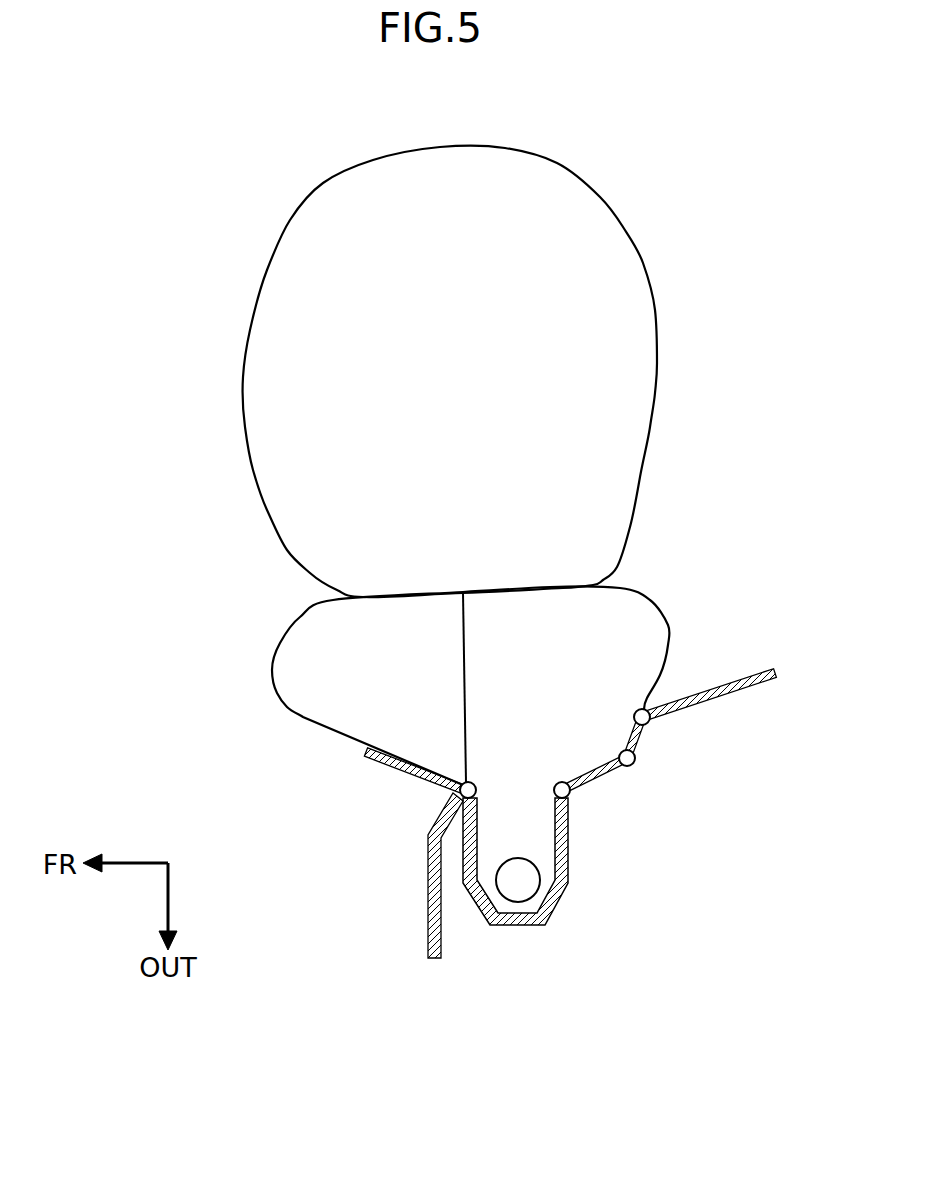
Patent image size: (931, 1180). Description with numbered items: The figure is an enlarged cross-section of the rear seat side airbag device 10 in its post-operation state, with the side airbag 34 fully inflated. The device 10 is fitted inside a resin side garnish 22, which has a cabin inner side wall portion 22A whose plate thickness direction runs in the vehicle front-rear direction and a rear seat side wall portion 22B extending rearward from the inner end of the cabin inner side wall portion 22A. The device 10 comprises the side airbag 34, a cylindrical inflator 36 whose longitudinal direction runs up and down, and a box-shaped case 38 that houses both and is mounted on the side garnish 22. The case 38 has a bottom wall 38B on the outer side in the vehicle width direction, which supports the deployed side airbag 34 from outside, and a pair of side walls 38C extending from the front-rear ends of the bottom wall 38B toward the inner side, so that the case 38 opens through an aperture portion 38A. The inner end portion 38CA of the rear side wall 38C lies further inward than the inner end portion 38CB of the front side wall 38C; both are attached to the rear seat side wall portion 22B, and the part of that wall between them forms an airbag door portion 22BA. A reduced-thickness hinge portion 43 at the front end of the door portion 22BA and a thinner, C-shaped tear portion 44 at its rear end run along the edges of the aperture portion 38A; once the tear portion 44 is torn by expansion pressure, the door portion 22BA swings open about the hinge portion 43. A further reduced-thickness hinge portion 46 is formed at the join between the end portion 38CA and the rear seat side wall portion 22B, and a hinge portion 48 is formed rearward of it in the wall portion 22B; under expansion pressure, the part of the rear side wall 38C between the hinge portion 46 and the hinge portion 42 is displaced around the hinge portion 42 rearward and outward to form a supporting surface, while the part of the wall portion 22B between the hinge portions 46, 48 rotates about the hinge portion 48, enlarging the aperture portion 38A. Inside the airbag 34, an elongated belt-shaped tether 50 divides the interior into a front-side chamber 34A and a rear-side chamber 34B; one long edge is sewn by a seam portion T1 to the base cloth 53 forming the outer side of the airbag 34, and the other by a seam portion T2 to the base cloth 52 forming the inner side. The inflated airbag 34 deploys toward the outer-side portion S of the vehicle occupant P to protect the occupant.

The vehicle occupant P is at (446, 163).
The rear seat side airbag device 10 is at (243, 643).
The side airbag 34 is at (647, 597).
The front-side chamber 34A is at (395, 690).
The rear-side chamber 34B is at (602, 674).
The base cloth 52 is at (623, 590).
The base cloth 53 is at (297, 713).
The tether 50 is at (463, 683).
The portion on the outer side of the vehicle occupant S is at (431, 580).
The seam portion T1 is at (472, 782).
The seam portion T2 is at (468, 596).
The side garnish 22 is at (427, 837).
The cabin inner side wall portion 22A is at (433, 913).
The rear seat side wall portion 22B is at (693, 695).
The airbag door portion 22BA is at (390, 765).
The inflator 36 is at (517, 863).
The case 38 is at (571, 870).
The aperture portion 38A is at (634, 721).
The bottom wall 38B is at (527, 923).
The side wall 38C is at (563, 827).
The end portion 38CA is at (617, 770).
The end portion 38CB is at (447, 808).
The hinge portion 42 is at (570, 797).
The hinge portion 43 is at (478, 790).
The tear portion 44 is at (633, 770).
The hinge portion 46 is at (640, 760).
The hinge portion 48 is at (652, 727).